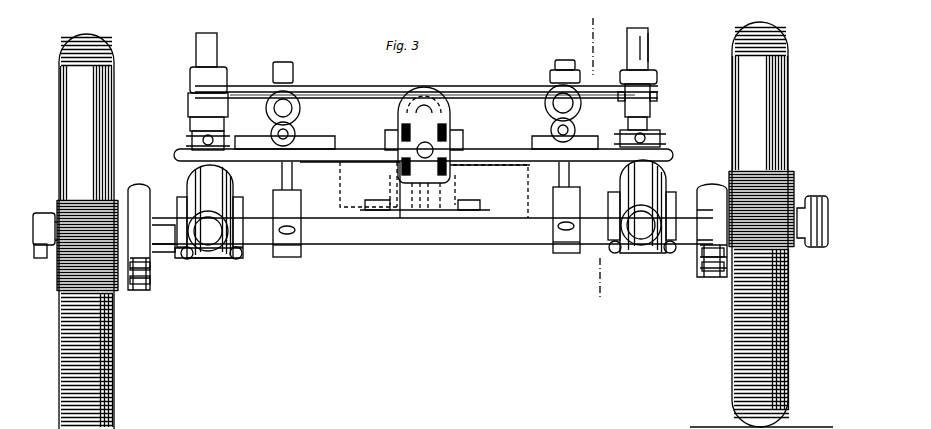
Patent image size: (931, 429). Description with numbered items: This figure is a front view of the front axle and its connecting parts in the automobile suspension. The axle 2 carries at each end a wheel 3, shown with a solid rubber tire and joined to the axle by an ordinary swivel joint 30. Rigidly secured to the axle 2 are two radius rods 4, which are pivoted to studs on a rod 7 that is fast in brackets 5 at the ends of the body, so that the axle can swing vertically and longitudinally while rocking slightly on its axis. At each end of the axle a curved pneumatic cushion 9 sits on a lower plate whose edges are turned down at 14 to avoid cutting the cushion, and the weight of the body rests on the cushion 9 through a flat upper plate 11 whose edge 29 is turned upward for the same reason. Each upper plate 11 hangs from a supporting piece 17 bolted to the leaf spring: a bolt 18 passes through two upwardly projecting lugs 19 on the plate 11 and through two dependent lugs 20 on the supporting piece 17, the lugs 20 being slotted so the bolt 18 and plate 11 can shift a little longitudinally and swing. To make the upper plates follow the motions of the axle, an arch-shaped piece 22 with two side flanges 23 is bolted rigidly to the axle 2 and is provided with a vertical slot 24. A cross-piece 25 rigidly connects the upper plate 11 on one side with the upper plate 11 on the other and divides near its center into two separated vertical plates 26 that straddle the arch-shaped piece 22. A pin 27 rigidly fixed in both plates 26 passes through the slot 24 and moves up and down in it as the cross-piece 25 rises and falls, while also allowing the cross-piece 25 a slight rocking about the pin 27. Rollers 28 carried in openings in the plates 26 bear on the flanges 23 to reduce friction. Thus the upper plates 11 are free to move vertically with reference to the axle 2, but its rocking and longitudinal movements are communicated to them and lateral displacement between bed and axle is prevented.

The axle 2 is at (440, 258).
The wheel 3 is at (775, 45).
The radius rod 4 is at (295, 180).
The bracket 5 is at (124, 52).
The rod 7 is at (426, 77).
The pneumatic cushion 9 is at (237, 180).
The upper plate 11 is at (681, 151).
The turned-down edge 14 is at (186, 260).
The supporting piece 17 is at (673, 51).
The bolt 18 is at (196, 140).
The upwardly projecting lug 19 is at (622, 142).
The dependent lug 20 is at (228, 80).
The arch-shaped piece 22 is at (445, 88).
The flange 23 is at (426, 97).
The vertical slot 24 is at (432, 200).
The cross-piece 25 is at (372, 156).
The vertical plate 26 is at (455, 143).
The pin 27 is at (430, 138).
The roller 28 is at (397, 130).
The turned-over edge 29 is at (180, 157).
The swivel joint 30 is at (150, 268).